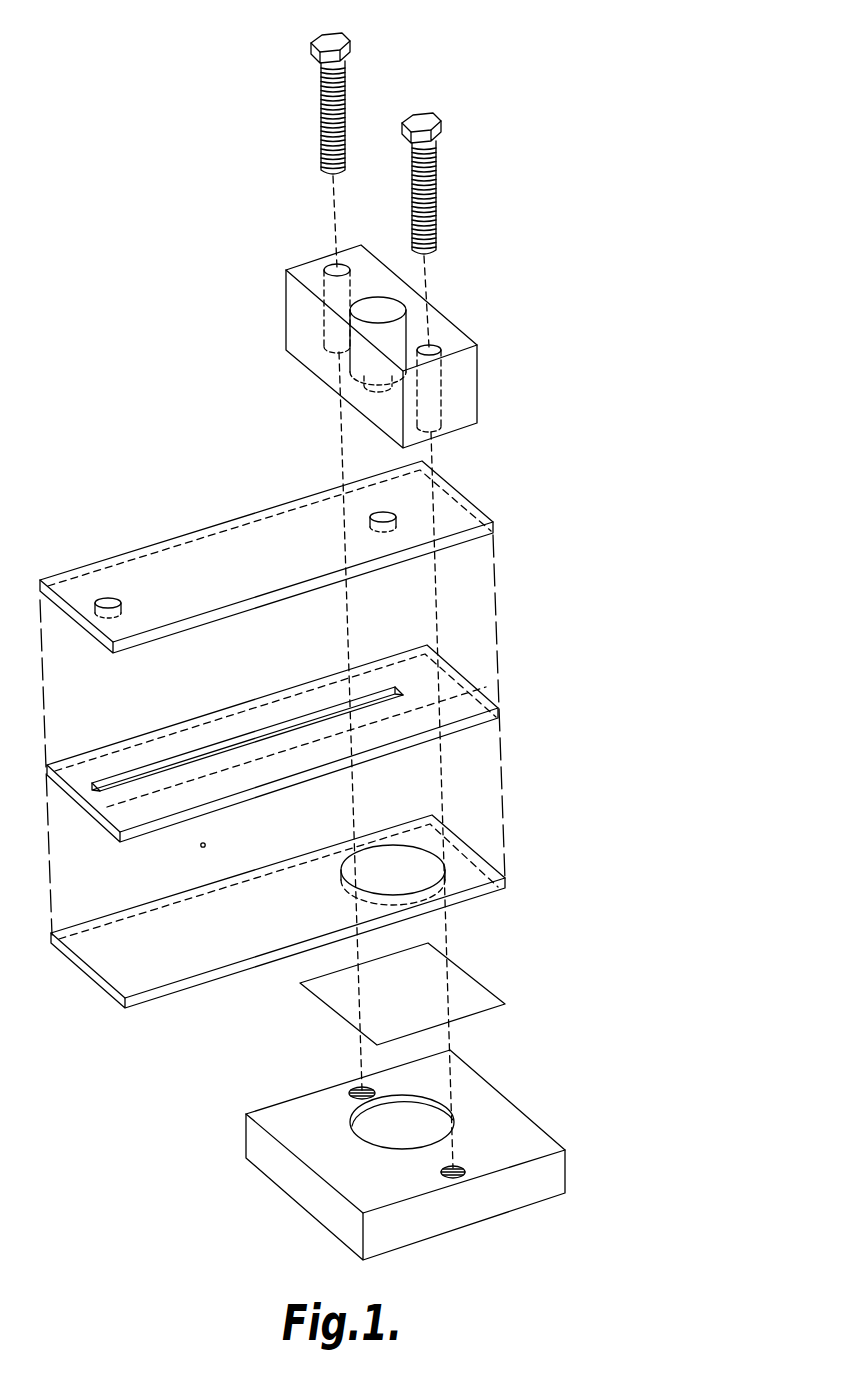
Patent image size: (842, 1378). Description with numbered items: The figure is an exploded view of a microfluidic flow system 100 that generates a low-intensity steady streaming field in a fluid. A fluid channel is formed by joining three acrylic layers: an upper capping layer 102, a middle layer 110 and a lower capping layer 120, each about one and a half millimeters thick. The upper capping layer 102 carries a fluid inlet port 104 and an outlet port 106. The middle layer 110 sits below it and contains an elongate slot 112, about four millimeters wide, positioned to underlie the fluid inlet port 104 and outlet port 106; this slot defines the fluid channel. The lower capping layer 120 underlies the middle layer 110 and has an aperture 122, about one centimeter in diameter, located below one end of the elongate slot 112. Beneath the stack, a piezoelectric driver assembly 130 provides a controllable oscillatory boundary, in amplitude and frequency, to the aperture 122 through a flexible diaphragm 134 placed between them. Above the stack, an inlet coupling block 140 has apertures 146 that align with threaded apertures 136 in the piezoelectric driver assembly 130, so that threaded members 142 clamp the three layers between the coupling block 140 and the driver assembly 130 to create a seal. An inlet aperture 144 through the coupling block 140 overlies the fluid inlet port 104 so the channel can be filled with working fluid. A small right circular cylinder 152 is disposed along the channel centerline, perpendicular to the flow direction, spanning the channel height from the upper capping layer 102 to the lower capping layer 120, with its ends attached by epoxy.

The microfluidic flow system 100 is at (586, 507).
The upper capping layer 102 is at (273, 550).
The fluid inlet port 104 is at (383, 516).
The outlet port 106 is at (105, 598).
The middle layer 110 is at (272, 735).
The elongate slot 112 is at (247, 756).
The lower capping layer 120 is at (278, 892).
The aperture 122 is at (393, 858).
The piezoelectric driver assembly 130 is at (411, 1152).
The flexible diaphragm 134 is at (470, 977).
The threaded apertures 136 is at (358, 1089).
The inlet coupling block 140 is at (413, 333).
The threaded members 142 is at (337, 42).
The inlet aperture 144 is at (378, 308).
The apertures 146 is at (336, 268).
The small right circular cylinder 152 is at (205, 842).